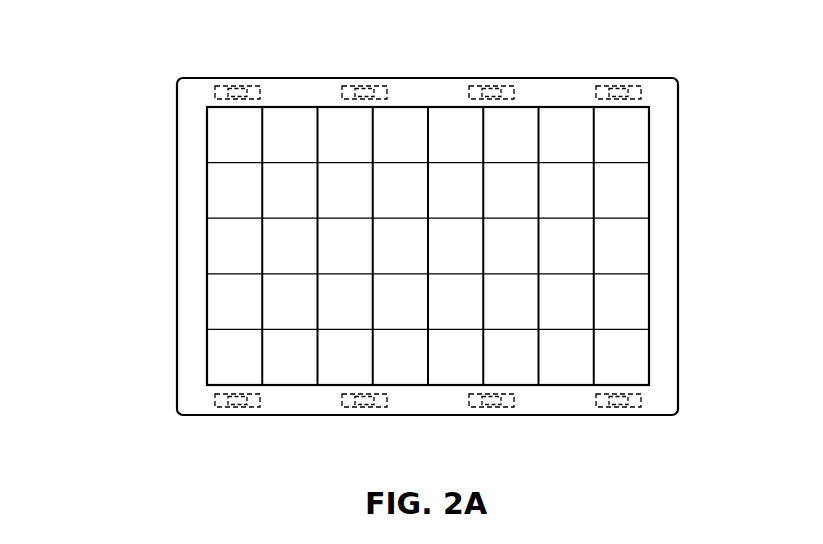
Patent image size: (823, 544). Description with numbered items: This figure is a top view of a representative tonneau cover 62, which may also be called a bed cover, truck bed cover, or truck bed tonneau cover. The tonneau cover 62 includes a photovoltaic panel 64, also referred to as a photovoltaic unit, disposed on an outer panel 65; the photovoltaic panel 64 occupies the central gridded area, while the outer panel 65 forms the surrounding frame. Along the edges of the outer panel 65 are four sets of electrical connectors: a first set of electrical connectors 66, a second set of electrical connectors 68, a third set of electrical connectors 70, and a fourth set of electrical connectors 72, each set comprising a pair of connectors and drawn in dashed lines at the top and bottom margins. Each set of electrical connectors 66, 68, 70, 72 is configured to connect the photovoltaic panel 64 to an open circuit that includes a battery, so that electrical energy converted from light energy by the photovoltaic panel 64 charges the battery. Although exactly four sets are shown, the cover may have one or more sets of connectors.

The tonneau cover 62 is at (134, 42).
The photovoltaic panel 64 is at (649, 247).
The outer panel 65 is at (177, 246).
The first set of electrical connectors 66 is at (607, 86).
The second set of electrical connectors 68 is at (480, 86).
The third set of electrical connectors 70 is at (377, 86).
The fourth set of electrical connectors 72 is at (249, 86).